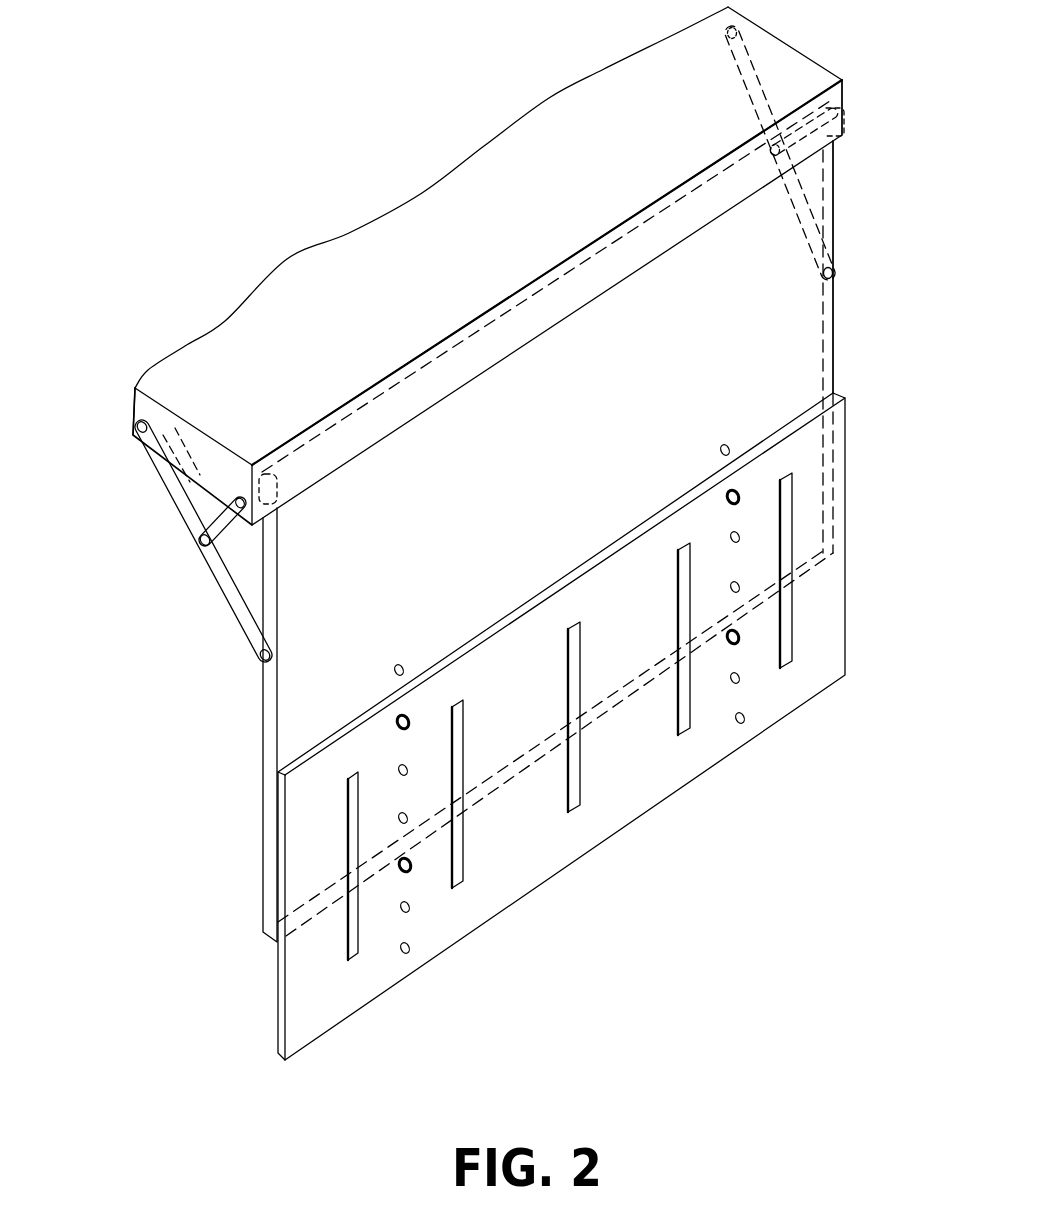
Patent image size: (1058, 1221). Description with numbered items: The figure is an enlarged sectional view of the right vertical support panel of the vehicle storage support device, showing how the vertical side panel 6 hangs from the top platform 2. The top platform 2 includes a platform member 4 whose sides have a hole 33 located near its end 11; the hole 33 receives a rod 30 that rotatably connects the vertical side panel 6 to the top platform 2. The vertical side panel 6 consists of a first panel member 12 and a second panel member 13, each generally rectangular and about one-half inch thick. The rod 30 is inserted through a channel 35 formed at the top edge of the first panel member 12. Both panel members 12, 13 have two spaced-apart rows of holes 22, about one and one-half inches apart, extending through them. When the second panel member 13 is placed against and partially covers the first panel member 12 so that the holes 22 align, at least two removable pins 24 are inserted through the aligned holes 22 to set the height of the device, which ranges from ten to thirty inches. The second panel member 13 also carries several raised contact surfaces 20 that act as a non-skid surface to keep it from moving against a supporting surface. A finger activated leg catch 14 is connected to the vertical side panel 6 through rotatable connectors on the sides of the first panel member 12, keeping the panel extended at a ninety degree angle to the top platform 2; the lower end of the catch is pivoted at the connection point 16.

The top platform 2 is at (136, 391).
The platform member 4 is at (788, 43).
The vertical side panel 6 is at (838, 365).
The end of platform member 11 is at (840, 97).
The first panel member 12 is at (838, 308).
The second panel member 13 is at (846, 563).
The finger activated leg catch 14 is at (241, 627).
The lower pivot 16 is at (258, 661).
The raised contact surfaces 20 is at (796, 613).
The holes 22 is at (744, 724).
The removable pins 24 is at (740, 639).
The rod 30 is at (242, 498).
The hole 33 is at (235, 508).
The channel 35 is at (613, 236).